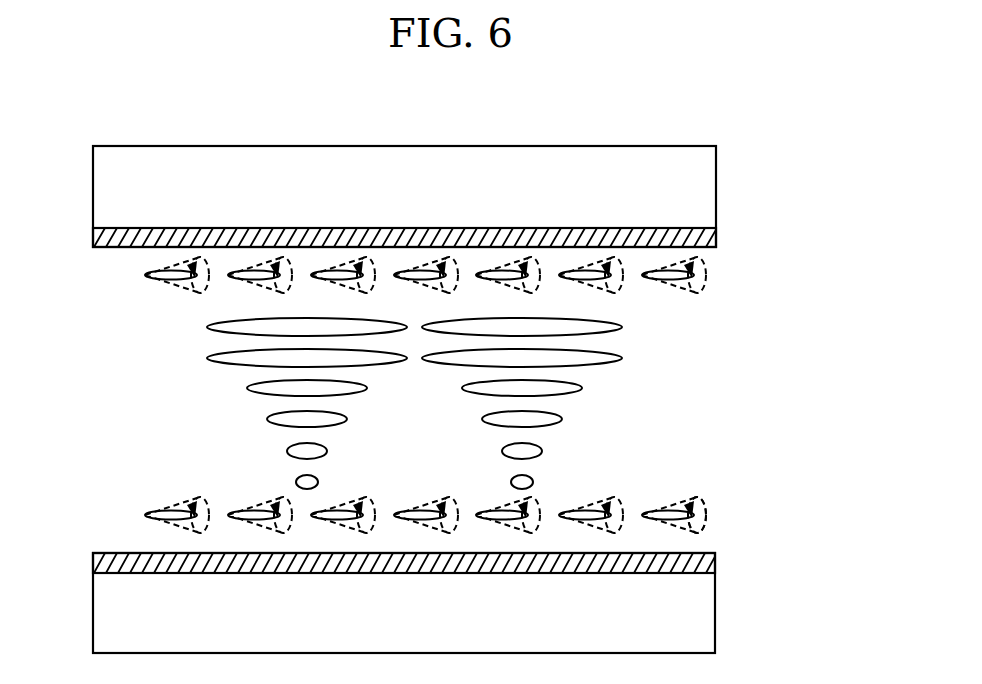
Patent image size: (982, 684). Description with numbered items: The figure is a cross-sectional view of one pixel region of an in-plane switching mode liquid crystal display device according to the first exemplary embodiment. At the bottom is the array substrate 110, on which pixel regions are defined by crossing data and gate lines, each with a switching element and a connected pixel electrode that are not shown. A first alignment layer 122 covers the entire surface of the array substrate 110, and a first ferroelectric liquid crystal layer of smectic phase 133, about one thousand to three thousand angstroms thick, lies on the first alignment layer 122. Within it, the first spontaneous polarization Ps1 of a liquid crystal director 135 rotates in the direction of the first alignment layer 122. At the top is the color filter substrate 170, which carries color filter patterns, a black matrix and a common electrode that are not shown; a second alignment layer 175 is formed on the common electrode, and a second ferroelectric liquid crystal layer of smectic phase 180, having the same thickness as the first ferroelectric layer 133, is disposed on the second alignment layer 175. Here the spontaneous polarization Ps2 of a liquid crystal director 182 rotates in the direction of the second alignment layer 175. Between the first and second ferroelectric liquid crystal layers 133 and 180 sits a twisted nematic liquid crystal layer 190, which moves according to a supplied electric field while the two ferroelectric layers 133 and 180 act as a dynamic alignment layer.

The array substrate 110 is at (697, 623).
The first alignment layer 122 is at (715, 558).
The first ferroelectric liquid crystal layer of smectic phase (SmC*) 133 is at (499, 463).
The liquid crystal director 135 is at (665, 508).
The first spontaneous polarization Ps1 is at (698, 505).
The color filter substrate 170 is at (708, 180).
The second alignment layer 175 is at (712, 243).
The second ferroelectric liquid crystal layer of smectic phase (SmC*) 180 is at (511, 319).
The liquid crystal director 182 is at (165, 277).
The spontaneous polarization Ps2 is at (690, 287).
The twisted nematic liquid crystal layer 190 is at (108, 295).